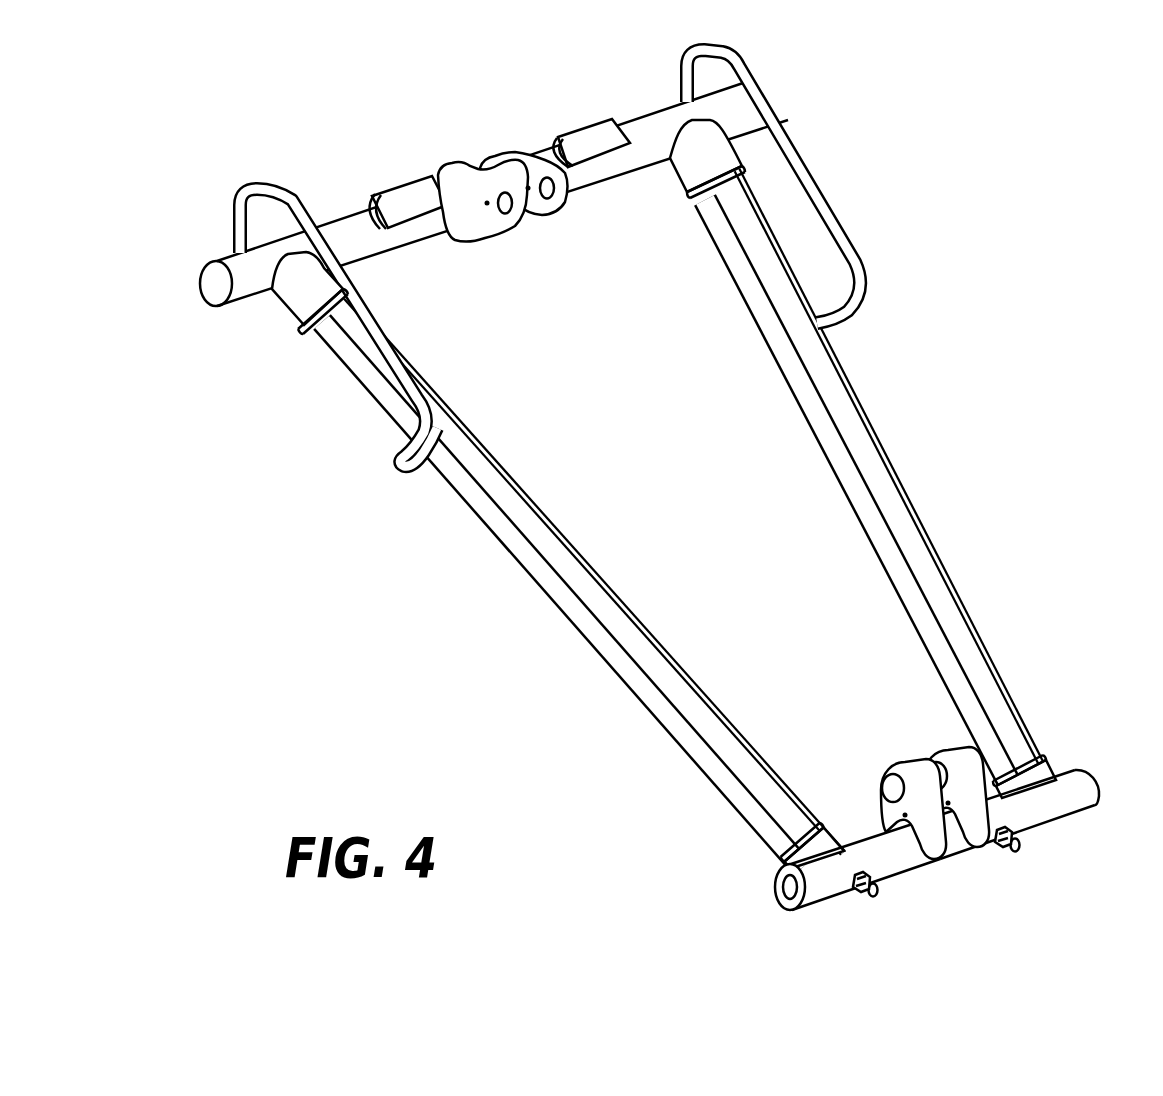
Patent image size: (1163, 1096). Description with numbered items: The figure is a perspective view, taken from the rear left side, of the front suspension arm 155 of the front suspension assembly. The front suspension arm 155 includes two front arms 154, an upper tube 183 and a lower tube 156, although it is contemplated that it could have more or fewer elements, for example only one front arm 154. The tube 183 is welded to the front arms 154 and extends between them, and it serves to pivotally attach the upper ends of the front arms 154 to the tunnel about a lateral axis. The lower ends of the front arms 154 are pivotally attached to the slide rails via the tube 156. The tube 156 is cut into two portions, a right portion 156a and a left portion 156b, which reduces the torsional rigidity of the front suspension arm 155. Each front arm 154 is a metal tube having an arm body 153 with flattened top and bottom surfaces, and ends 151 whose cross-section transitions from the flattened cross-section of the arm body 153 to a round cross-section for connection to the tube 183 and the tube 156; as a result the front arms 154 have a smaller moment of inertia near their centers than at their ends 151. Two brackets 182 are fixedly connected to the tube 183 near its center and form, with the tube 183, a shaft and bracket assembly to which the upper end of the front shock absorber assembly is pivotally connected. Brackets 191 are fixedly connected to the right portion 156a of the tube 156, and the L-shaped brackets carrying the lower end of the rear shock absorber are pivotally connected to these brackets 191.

The ends 151 is at (750, 225).
The arm body 153 is at (828, 440).
The front arms 154 is at (903, 530).
The front suspension arm 155 is at (1069, 333).
The tube 156 is at (1082, 793).
The right portion 156a is at (1050, 817).
The left portion 156b is at (894, 863).
The brackets 182 is at (521, 162).
The tube 183 is at (651, 130).
The brackets 191 is at (932, 758).